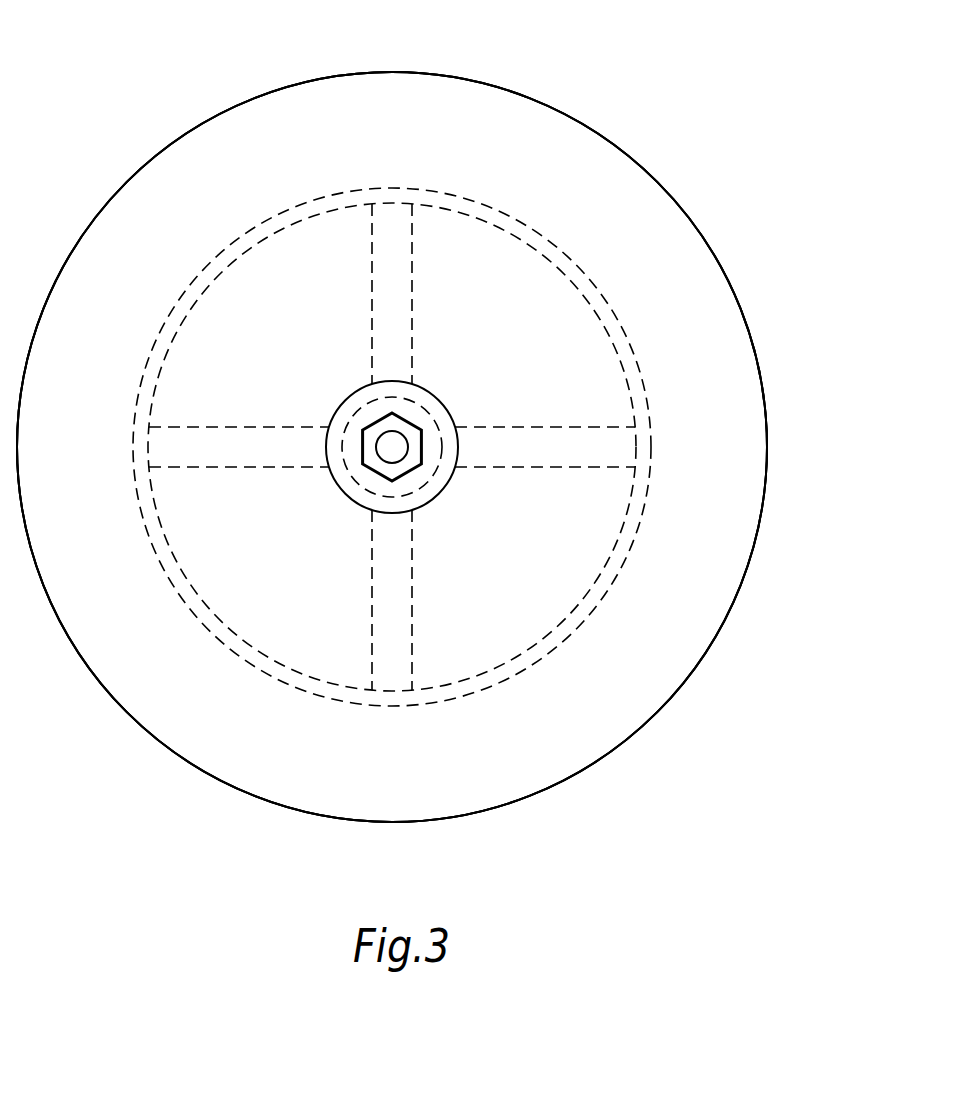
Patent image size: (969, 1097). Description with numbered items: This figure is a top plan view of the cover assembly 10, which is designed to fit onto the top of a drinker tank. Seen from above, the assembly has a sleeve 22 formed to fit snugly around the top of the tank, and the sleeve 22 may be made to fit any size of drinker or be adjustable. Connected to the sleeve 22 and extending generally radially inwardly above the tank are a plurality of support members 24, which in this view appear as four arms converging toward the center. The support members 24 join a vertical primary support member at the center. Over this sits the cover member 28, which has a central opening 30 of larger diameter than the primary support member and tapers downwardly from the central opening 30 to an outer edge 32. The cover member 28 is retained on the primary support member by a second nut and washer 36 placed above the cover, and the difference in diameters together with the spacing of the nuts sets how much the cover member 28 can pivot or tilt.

The cover assembly 10 is at (553, 68).
The sleeve 22 is at (173, 560).
The support members 24 is at (262, 427).
The cover member 28 is at (608, 720).
The central opening 30 is at (417, 402).
The outer edge 32 is at (612, 141).
The second nut and washer 36 is at (405, 473).